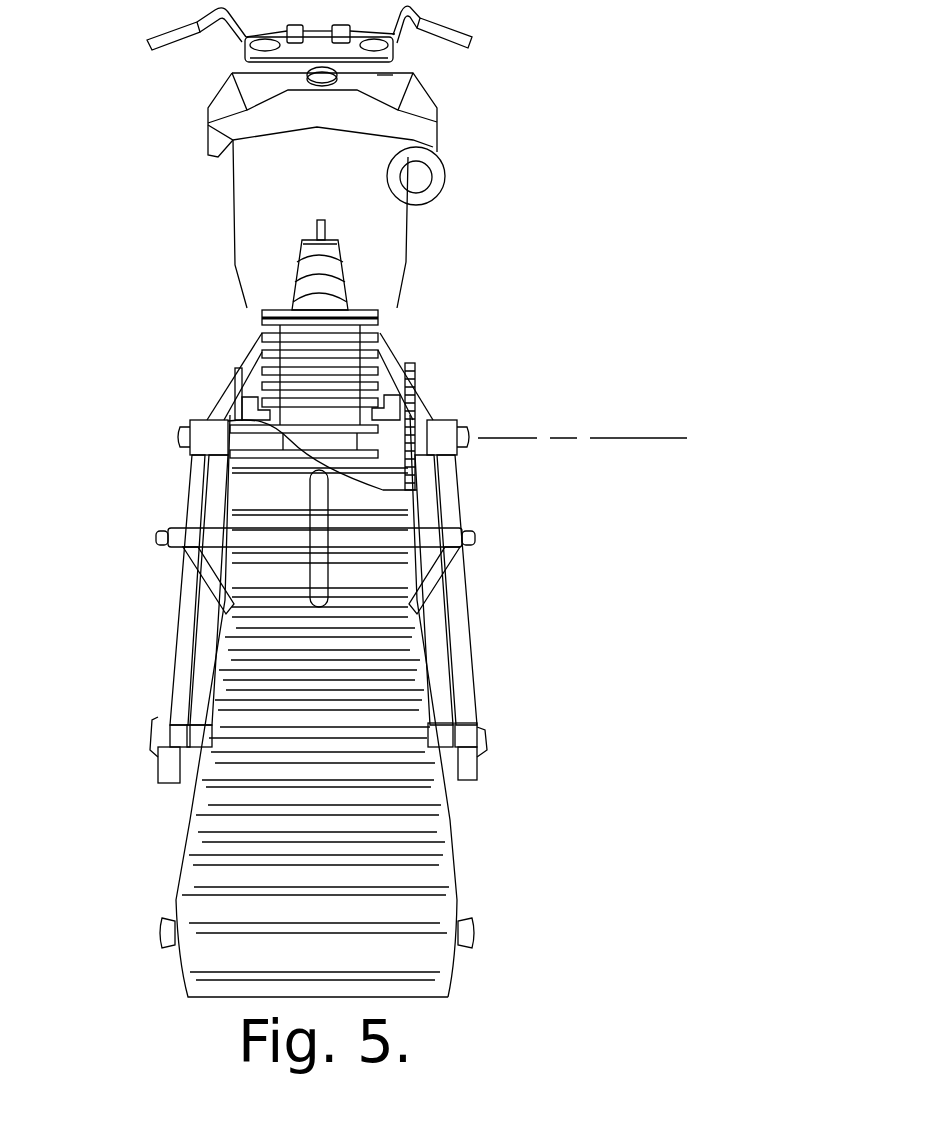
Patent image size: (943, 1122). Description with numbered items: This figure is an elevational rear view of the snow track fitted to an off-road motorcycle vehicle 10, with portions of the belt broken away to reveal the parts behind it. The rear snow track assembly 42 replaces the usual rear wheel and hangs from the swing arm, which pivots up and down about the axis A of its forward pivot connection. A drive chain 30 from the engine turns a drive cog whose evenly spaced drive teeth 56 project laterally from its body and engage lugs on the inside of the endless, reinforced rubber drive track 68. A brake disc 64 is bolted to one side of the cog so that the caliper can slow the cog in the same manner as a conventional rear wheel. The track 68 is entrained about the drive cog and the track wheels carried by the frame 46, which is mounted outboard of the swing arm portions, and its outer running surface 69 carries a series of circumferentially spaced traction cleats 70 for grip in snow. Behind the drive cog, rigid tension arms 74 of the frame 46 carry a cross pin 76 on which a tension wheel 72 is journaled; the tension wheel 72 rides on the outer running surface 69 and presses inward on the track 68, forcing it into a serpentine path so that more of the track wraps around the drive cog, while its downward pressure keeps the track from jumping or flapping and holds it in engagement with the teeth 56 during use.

The off-road motorcycle vehicle 10 is at (457, 263).
The drive chain 30 is at (416, 366).
The rear snow track assembly 42 is at (562, 597).
The frame 46 is at (177, 710).
The drive teeth 56 is at (373, 353).
The brake disc 64 is at (233, 373).
The drive track 68 is at (172, 841).
The outer running surface 69 is at (438, 908).
The traction cleats 70 is at (240, 463).
The tension wheel 72 is at (318, 497).
The tension arms 74 is at (160, 548).
The cross pin 76 is at (477, 535).
The axis A is at (668, 438).